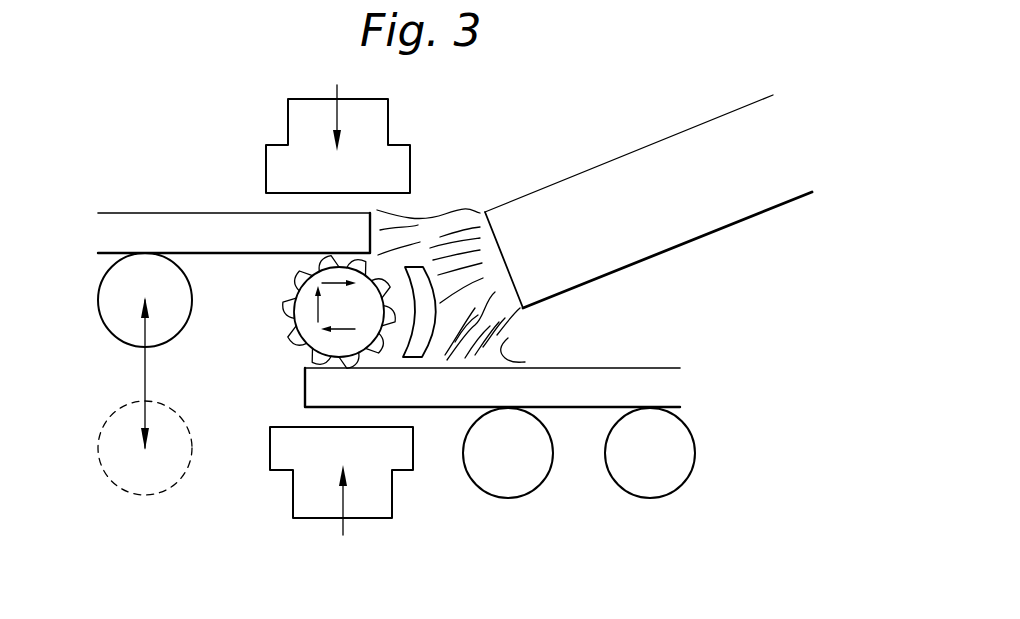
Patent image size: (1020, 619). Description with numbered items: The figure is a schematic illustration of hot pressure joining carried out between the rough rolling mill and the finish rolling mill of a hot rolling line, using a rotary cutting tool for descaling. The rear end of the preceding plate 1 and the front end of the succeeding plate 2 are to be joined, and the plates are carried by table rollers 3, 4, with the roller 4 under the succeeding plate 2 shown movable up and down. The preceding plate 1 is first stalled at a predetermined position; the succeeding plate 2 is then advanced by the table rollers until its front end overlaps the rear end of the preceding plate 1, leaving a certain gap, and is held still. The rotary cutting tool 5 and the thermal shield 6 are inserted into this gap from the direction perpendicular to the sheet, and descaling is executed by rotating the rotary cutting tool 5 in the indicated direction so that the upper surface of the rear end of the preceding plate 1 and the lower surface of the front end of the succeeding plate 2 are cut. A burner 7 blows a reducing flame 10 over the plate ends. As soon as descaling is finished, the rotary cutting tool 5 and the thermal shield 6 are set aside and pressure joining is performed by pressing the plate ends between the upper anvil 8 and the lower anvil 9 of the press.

The preceding plate 1 is at (580, 398).
The succeeding plate 2 is at (169, 230).
The table rollers 3 is at (650, 486).
The table roller 4 is at (113, 316).
The rotary cutting tool 5 is at (291, 334).
The thermal shield 6 is at (424, 272).
The burner 7 is at (592, 186).
The upper anvil 8 is at (401, 158).
The lower anvil 9 is at (401, 462).
The reducing flame 10 is at (505, 334).